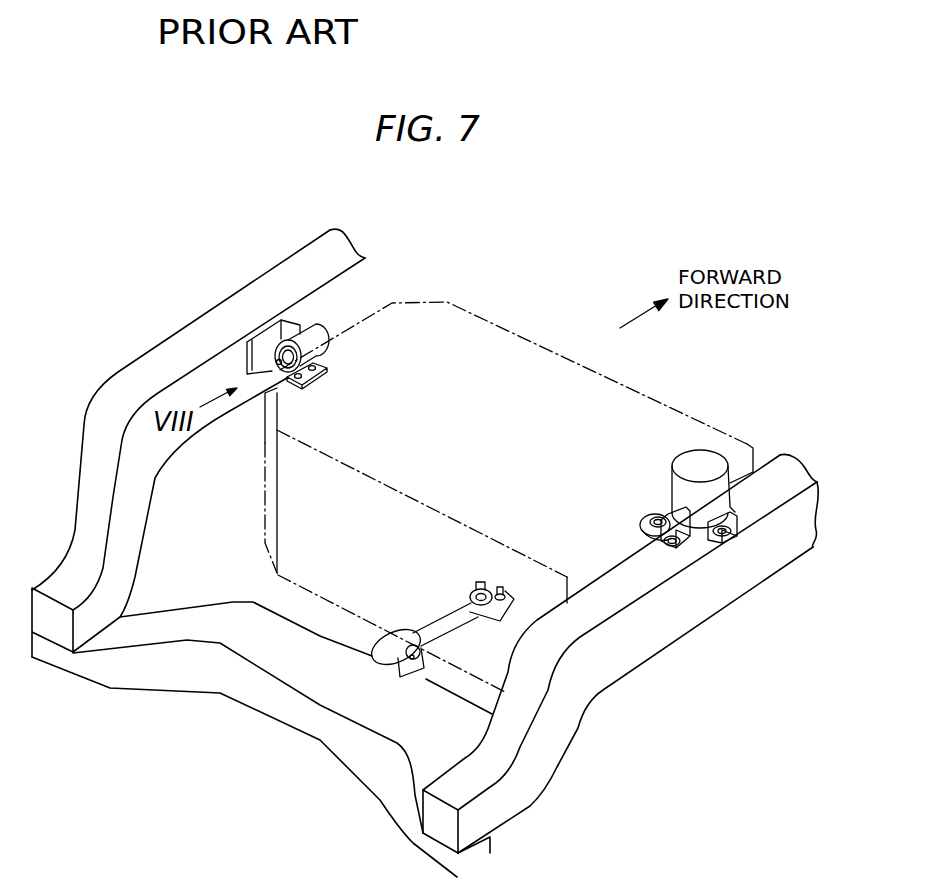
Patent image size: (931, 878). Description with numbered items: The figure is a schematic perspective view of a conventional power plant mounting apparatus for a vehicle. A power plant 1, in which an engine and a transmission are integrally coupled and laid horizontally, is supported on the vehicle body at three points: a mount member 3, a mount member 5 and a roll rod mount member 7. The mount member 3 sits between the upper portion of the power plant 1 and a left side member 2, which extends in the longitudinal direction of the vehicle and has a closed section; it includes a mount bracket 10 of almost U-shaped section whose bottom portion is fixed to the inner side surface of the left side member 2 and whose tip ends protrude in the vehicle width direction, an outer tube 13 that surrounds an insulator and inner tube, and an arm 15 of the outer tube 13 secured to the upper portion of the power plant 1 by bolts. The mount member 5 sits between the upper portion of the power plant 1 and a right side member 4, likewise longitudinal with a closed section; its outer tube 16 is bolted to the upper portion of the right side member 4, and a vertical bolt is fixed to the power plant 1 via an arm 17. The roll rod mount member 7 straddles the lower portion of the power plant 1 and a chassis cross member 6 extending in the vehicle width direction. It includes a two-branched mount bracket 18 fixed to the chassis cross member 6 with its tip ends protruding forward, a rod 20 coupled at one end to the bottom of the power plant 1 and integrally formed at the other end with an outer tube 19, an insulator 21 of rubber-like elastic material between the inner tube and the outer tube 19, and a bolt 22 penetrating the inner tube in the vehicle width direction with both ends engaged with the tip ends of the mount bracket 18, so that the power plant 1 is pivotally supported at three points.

The power plant 1 is at (545, 346).
The left side member 2 is at (200, 322).
The mount member 3 is at (326, 317).
The right side member 4 is at (727, 605).
The mount member 5 is at (701, 440).
The chassis cross member 6 is at (288, 731).
The roll rod mount member 7 is at (440, 620).
The mount bracket 10 is at (262, 402).
The outer tube 13 is at (312, 322).
The arm 15 is at (317, 370).
The outer tube 16 is at (672, 482).
The arm 17 is at (660, 503).
The mount bracket 18 is at (422, 674).
The outer tube 19 is at (402, 632).
The rod 20 is at (452, 630).
The insulator 21 is at (420, 636).
The bolt 22 is at (410, 656).